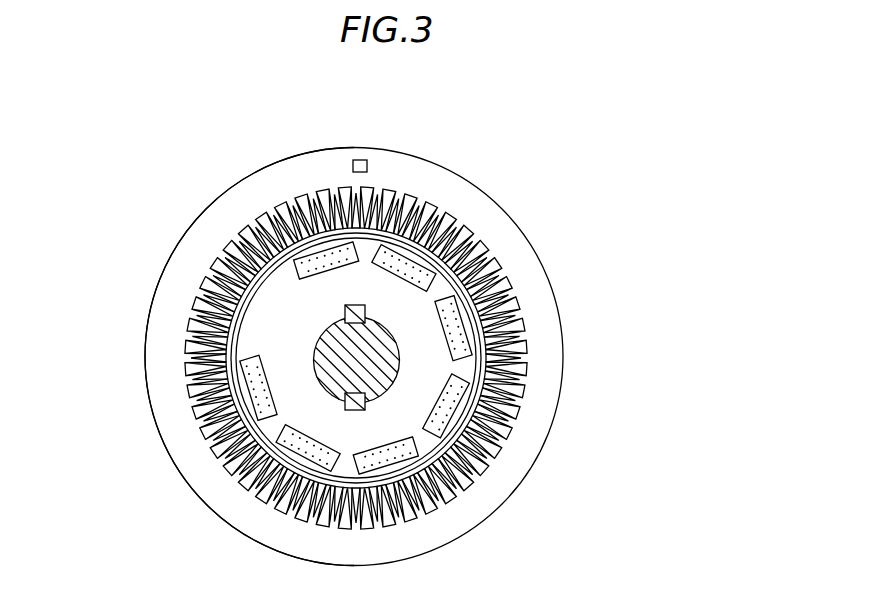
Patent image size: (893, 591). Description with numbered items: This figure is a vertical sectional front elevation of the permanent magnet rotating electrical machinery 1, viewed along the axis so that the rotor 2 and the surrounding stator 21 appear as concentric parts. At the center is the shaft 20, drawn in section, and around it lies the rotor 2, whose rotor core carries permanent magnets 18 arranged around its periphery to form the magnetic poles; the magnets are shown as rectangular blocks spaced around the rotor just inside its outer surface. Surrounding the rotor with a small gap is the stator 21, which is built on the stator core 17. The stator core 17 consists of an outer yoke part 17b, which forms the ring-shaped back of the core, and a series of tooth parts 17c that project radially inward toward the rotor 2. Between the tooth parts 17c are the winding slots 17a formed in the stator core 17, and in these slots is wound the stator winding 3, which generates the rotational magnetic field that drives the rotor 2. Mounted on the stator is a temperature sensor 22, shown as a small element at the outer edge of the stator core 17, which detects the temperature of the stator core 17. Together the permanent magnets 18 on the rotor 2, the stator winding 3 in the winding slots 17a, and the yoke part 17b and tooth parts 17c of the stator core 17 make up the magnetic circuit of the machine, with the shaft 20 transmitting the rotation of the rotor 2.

The permanent magnet rotating electrical machinery 1 is at (257, 151).
The rotor 2 is at (354, 358).
The stator winding 3 is at (265, 226).
The stator core 17 is at (389, 357).
The winding slot 17a is at (505, 288).
The yoke part 17b is at (222, 486).
The tooth part 17c is at (492, 243).
The permanent magnet 18 is at (470, 333).
The shaft 20 is at (372, 368).
The stator 21 is at (454, 158).
The temperature sensor 22 is at (360, 160).